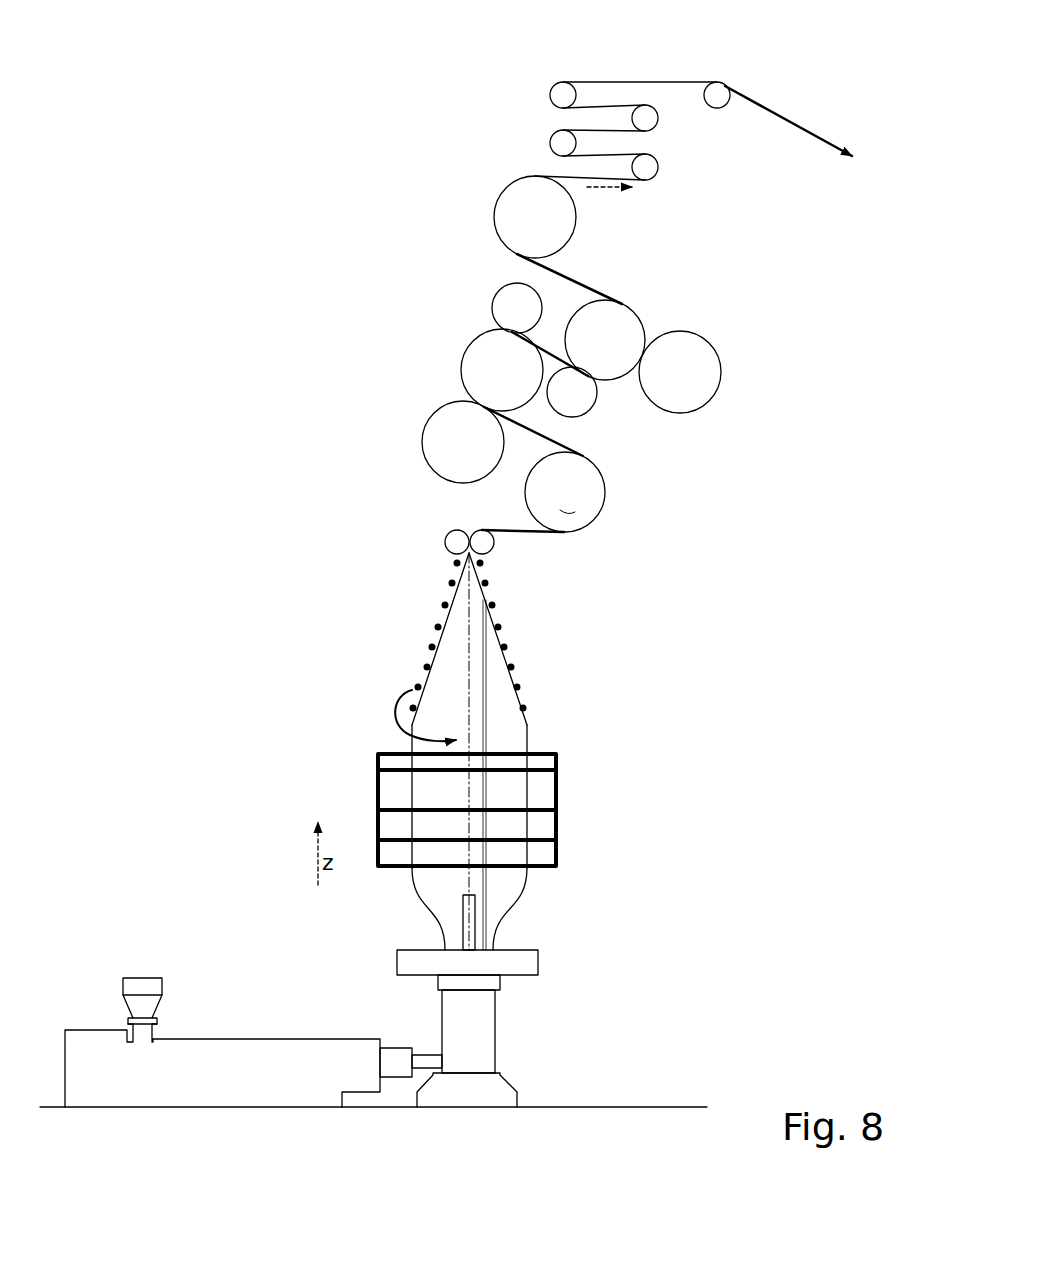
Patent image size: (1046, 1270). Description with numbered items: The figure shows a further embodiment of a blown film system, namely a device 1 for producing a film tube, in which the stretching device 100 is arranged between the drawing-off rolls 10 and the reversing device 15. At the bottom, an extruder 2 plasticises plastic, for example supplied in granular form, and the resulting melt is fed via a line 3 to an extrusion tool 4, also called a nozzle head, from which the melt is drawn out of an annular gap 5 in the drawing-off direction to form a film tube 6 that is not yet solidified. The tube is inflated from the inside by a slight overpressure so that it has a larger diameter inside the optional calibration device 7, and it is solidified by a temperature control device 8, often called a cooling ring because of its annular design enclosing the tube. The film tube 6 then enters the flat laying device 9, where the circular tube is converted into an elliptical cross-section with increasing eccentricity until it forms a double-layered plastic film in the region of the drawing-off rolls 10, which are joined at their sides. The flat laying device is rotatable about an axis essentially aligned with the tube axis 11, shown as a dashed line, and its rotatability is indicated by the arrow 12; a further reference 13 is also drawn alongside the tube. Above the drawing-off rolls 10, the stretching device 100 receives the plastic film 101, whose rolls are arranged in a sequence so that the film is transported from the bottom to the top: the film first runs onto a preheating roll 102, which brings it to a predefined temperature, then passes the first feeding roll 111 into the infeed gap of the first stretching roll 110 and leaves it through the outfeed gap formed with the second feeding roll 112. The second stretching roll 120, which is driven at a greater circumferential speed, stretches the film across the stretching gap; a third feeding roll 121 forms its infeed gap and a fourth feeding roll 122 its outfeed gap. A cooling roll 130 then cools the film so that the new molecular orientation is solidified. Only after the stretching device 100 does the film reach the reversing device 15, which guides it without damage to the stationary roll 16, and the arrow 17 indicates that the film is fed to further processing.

The device for producing a film tube 1 is at (286, 682).
The extruder 2 is at (222, 1072).
The line 3 is at (430, 1062).
The extrusion tool 4 is at (477, 1057).
The annular gap 5 is at (502, 946).
The film tube 6 is at (522, 895).
The calibration device 7 is at (558, 820).
The temperature control device 8 is at (540, 967).
The flat laying device 9 is at (514, 634).
The drawing-off rolls 10 is at (436, 543).
The tube axis 11 is at (473, 742).
The arrow 12 is at (397, 715).
The guide lines 13 is at (485, 882).
The reversing device 15 is at (544, 111).
The stationary roll 16 is at (720, 97).
The arrow 17 is at (830, 140).
The stretching device 100 is at (668, 504).
The plastic film 101 is at (535, 433).
The preheating roll 102 is at (573, 513).
The first stretching roll 110 is at (475, 370).
The first feeding roll 111 is at (467, 413).
The second feeding roll 112 is at (508, 305).
The second stretching roll 120 is at (630, 320).
The third feeding roll 121 is at (587, 388).
The fourth feeding roll 122 is at (675, 347).
The cooling roll 130 is at (508, 213).